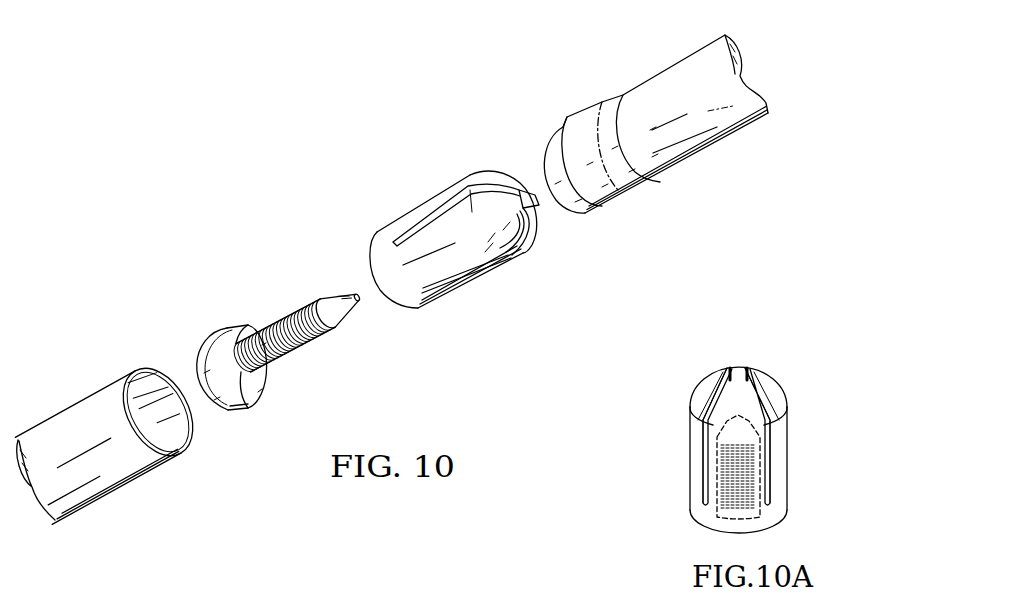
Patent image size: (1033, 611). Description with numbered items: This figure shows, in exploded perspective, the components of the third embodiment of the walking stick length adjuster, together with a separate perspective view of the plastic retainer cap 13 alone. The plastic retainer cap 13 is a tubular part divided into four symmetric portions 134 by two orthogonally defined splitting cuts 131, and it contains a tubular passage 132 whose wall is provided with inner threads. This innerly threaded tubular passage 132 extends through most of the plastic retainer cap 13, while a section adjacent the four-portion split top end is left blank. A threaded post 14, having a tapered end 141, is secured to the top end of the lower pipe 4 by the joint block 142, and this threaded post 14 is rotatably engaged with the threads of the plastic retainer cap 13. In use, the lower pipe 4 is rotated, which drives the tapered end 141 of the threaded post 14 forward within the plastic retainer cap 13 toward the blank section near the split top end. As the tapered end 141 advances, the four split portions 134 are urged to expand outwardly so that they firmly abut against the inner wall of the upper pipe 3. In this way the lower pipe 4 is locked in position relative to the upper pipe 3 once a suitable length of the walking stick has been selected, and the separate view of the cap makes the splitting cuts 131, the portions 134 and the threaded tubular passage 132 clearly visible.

In FIG. 10, the upper pipe 3 is at (712, 140).
In FIG. 10, the lower pipe 4 is at (118, 485).
In FIG. 10, the plastic retainer cap 13 is at (495, 255).
In FIG. 10A, the plastic retainer cap 13 is at (731, 420).
In FIG. 10, the threaded post 14 is at (345, 349).
In FIG. 10, the splitting cuts 131 is at (488, 275).
In FIG. 10A, the splitting cuts 131 is at (736, 435).
In FIG. 10A, the tubular passage 132 is at (752, 512).
In FIG. 10A, the symmetric portions 134 is at (738, 436).
In FIG. 10, the tapered end 141 is at (353, 318).
In FIG. 10, the joint block 142 is at (238, 410).